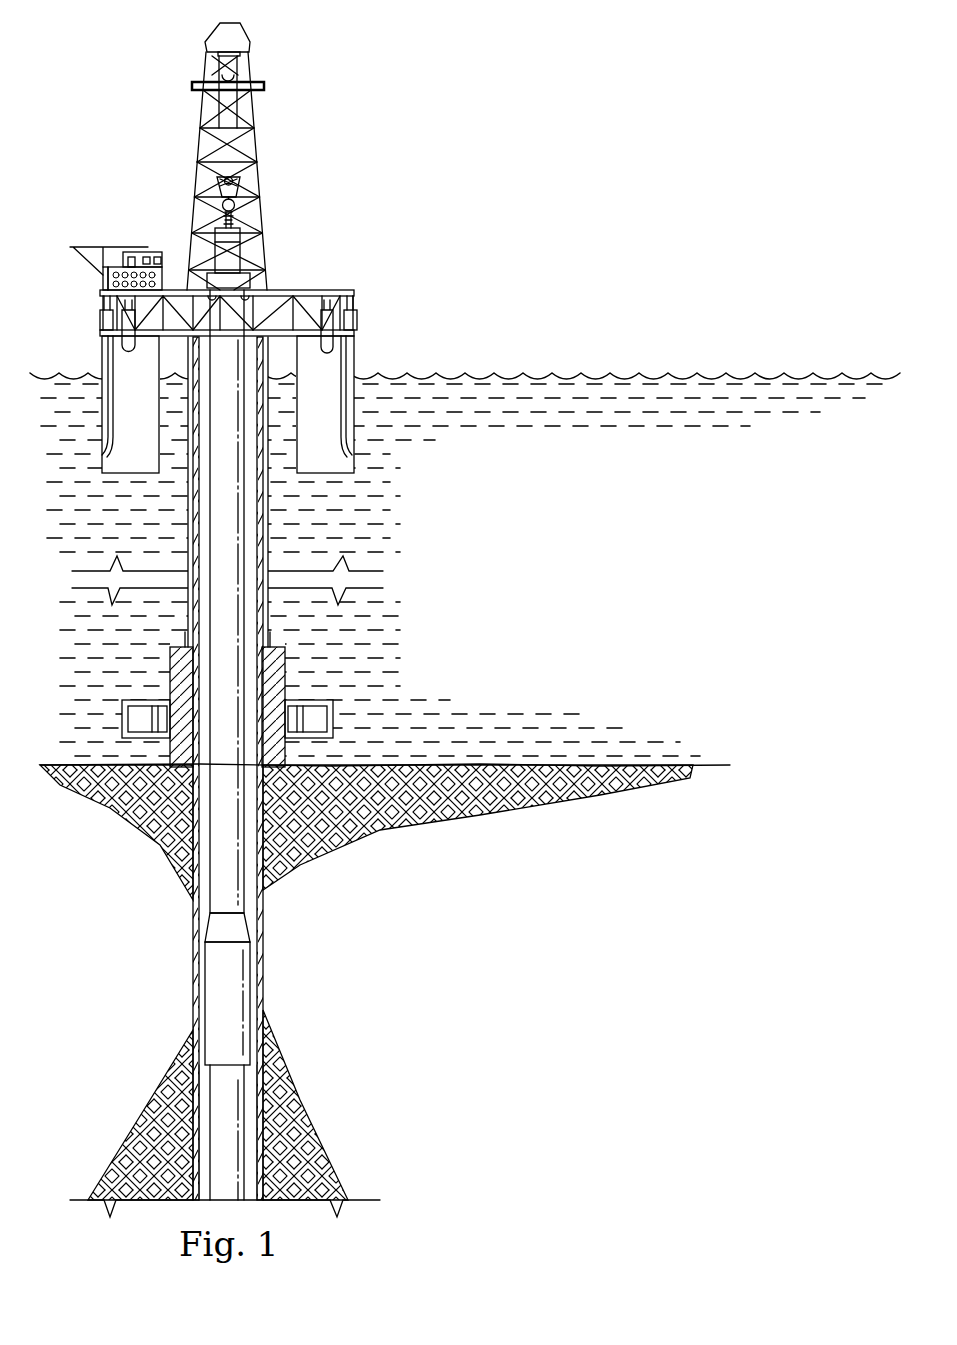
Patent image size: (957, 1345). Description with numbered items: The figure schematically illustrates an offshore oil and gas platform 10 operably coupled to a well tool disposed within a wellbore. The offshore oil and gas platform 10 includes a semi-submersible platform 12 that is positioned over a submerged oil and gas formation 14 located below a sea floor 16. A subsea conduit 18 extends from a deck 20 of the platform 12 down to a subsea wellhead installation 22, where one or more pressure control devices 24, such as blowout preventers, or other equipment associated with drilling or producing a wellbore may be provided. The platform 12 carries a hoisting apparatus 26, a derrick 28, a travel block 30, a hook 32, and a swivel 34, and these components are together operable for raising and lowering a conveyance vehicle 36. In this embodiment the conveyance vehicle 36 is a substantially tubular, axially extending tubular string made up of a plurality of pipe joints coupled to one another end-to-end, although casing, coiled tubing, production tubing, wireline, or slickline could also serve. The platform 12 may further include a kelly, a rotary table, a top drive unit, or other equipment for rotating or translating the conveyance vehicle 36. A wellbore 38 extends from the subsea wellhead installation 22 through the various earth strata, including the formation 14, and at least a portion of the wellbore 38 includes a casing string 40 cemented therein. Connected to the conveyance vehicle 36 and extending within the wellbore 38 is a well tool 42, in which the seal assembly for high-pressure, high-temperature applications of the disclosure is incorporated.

The offshore oil and gas platform 10 is at (366, 153).
The semi-submersible platform 12 is at (344, 290).
The submerged oil and gas formation 14 is at (494, 964).
The sea floor 16 is at (710, 765).
The subsea conduit 18 is at (270, 495).
The deck 20 is at (356, 331).
The subsea wellhead installation 22 is at (170, 680).
The pressure control device 24 is at (318, 712).
The hoisting apparatus 26 is at (248, 276).
The derrick 28 is at (206, 64).
The travel block 30 is at (207, 187).
The hook 32 is at (215, 211).
The swivel 34 is at (247, 230).
The conveyance vehicle 36 is at (208, 907).
The wellbore 38 is at (205, 1100).
The casing string 40 is at (262, 985).
The well tool 42 is at (212, 998).